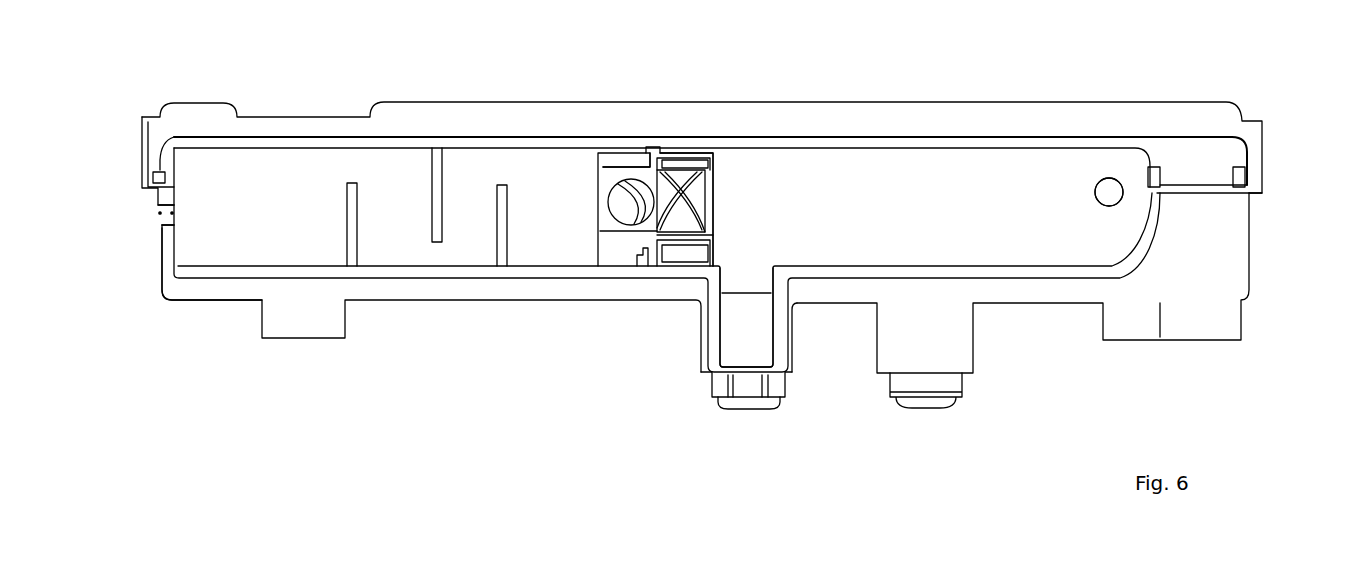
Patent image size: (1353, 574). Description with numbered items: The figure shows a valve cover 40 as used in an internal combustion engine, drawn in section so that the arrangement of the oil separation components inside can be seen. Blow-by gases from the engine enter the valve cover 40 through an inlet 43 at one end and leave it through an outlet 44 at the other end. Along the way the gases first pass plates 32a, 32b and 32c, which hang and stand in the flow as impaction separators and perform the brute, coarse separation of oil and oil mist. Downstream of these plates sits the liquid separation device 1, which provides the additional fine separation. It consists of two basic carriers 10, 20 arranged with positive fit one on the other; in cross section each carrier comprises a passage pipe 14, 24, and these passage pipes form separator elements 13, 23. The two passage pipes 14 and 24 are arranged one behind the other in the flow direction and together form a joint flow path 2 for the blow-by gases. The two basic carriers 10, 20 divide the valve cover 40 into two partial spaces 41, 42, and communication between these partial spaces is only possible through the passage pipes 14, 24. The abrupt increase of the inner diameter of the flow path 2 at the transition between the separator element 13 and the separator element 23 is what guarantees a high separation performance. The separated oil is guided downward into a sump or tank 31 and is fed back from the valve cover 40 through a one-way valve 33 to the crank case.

The liquid separation device 1 is at (715, 165).
The flow path 2 is at (600, 167).
The basic carrier 10 is at (623, 163).
The separator element 13 is at (620, 205).
The passage pipe 14 is at (606, 190).
The basic carrier 20 is at (690, 167).
The separator element 23 is at (697, 208).
The passage pipe 24 is at (697, 195).
The sump or tank 31 is at (730, 338).
The plate 32a is at (347, 200).
The plate 32b is at (430, 170).
The plate 32c is at (497, 195).
The one-way valve 33 is at (748, 388).
The valve cover 40 is at (1236, 232).
The partial space 41 is at (238, 237).
The partial space 42 is at (960, 172).
The inlet 43 is at (162, 225).
The outlet 44 is at (1110, 192).